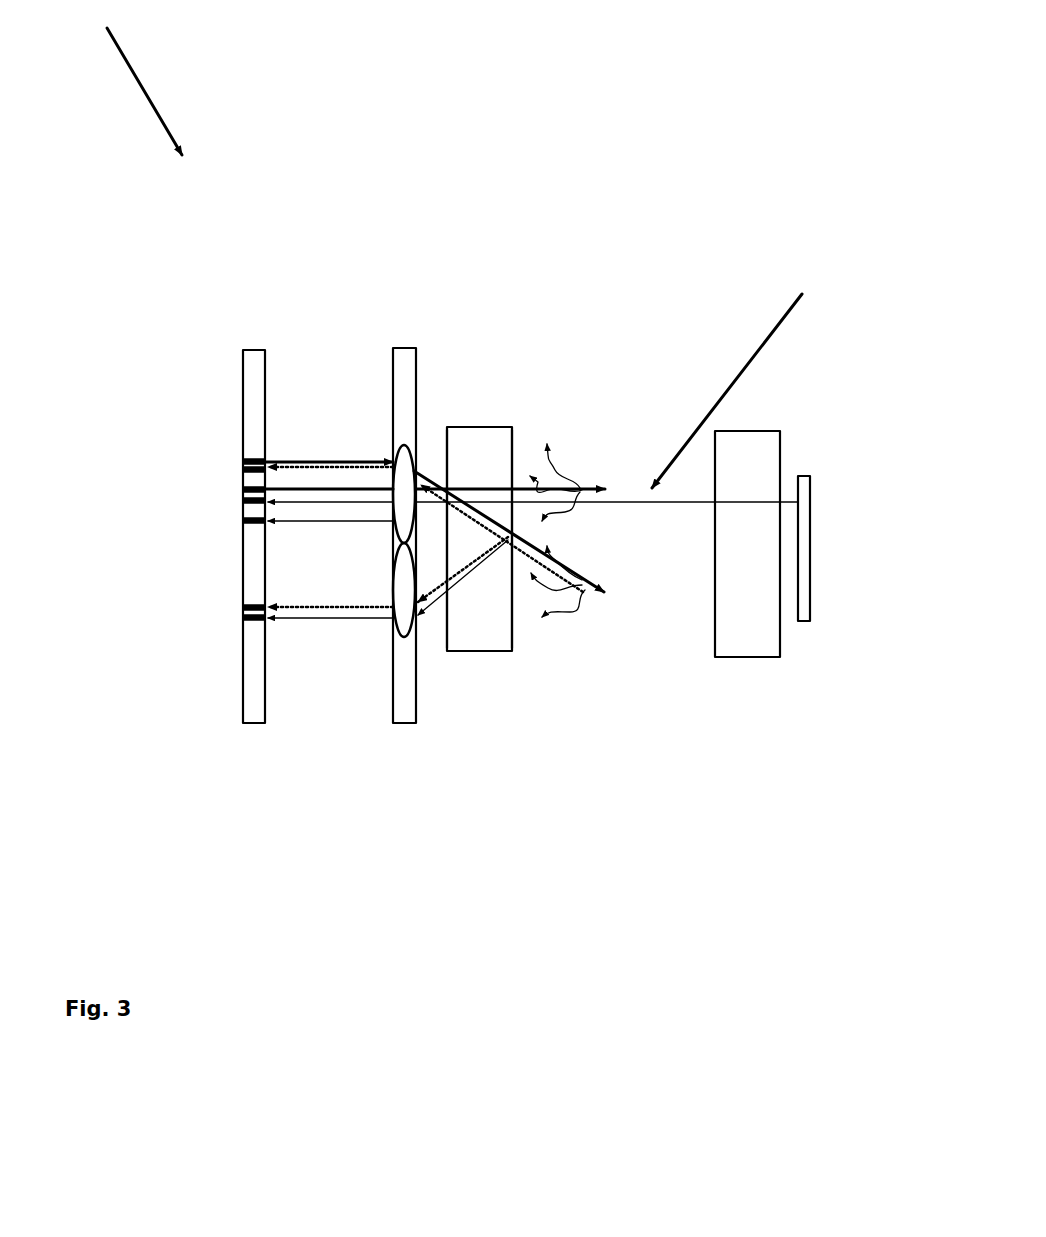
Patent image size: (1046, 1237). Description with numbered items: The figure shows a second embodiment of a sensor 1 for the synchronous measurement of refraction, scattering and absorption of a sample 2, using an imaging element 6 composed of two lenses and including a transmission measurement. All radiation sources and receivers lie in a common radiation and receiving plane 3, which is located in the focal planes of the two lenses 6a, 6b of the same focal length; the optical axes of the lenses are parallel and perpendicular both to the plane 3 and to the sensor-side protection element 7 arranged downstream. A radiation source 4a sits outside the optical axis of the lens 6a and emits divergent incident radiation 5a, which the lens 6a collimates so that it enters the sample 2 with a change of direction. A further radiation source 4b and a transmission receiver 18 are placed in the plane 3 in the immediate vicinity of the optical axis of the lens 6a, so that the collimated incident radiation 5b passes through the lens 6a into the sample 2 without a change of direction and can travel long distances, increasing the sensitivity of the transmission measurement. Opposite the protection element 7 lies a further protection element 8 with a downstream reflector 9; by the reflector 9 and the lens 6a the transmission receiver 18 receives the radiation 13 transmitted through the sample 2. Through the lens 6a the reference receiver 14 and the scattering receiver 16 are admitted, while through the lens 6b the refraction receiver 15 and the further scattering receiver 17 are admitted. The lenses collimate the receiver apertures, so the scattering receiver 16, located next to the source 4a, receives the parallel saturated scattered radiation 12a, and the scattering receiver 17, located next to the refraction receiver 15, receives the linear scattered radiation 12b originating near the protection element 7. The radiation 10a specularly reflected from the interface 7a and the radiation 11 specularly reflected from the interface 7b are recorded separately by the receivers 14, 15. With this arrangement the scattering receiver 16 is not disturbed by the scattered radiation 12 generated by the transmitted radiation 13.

The sensor 1 is at (134, 80).
The sample 2 is at (622, 389).
The radiation and receiving plane 3 is at (250, 358).
The radiation source 4a is at (266, 458).
The further radiation source 4b is at (268, 468).
The incident radiation 5a is at (330, 458).
The incident radiation 5b is at (340, 487).
The imaging element 6 is at (408, 347).
The lens 6a is at (412, 448).
The lens 6b is at (403, 637).
The protection element 7 is at (497, 427).
The interface 7a is at (443, 620).
The interface 7b is at (512, 613).
The further protection element 8 is at (780, 627).
The reflector 9 is at (810, 493).
The specularly reflected radiation 10a is at (420, 522).
The specularly reflected radiation 11 is at (423, 613).
The scattered radiation 12 is at (560, 618).
The saturated scattered radiation 12a is at (367, 463).
The linear scattered radiation 12b is at (350, 608).
The transmitted radiation 13 is at (608, 500).
The reference receiver 14 is at (243, 523).
The refraction receiver 15 is at (270, 620).
The scattering receiver 16 is at (270, 472).
The further scattering receiver 17 is at (243, 605).
The transmission receiver 18 is at (243, 498).